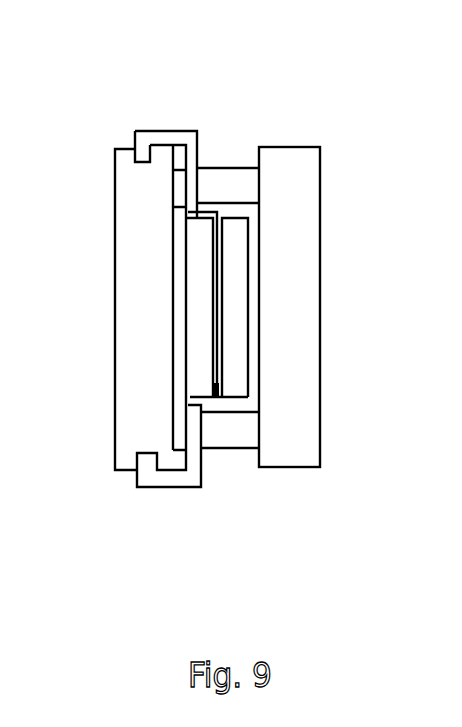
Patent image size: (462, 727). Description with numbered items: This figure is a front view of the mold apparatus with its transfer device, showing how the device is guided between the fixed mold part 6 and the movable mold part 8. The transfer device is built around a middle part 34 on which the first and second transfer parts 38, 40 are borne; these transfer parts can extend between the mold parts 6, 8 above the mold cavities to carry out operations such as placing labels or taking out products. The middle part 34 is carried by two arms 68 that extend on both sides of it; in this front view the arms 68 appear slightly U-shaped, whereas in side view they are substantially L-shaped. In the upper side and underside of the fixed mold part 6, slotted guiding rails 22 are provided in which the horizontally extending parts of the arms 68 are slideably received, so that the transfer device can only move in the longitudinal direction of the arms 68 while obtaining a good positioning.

The fixed mold part 6 is at (150, 357).
The movable mold part 8 is at (320, 296).
The slotted guiding rail 22 is at (142, 151).
The middle part 34 is at (220, 367).
The first transfer part 38 is at (200, 289).
The second transfer part 40 is at (233, 267).
The arm 68 is at (190, 131).